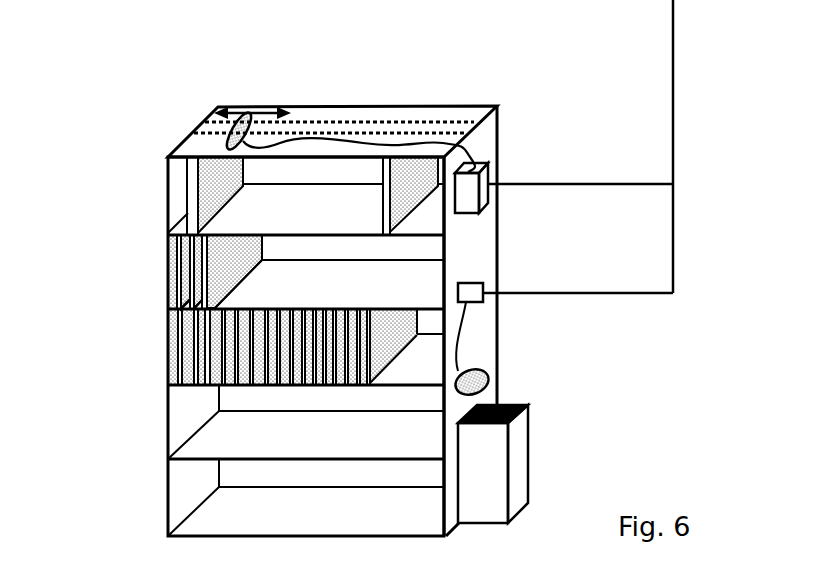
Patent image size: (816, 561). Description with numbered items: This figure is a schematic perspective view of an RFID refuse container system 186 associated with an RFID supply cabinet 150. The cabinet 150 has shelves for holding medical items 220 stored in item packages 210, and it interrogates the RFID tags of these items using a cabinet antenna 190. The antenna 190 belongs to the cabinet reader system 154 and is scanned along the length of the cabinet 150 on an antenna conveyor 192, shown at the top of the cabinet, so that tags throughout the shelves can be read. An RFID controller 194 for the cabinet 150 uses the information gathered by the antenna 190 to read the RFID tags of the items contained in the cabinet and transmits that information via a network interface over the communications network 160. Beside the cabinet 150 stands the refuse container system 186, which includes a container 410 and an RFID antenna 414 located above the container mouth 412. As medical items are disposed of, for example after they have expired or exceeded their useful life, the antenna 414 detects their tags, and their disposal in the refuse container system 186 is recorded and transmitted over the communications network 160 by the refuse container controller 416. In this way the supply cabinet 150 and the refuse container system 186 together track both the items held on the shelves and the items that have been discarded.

The cabinet reader system 154 is at (514, 137).
The cabinet antenna 190 is at (214, 113).
The antenna conveyor 192 is at (412, 123).
The RFID controller 194 is at (489, 182).
The refuse container controller 416 is at (484, 292).
The RFID antenna 414 is at (489, 378).
The RFID supply cabinet 150 is at (506, 346).
The communications network 160 is at (673, 247).
The container mouth 412 is at (521, 404).
The container 410 is at (530, 452).
The refuse container system 186 is at (556, 472).
The item packages 210 is at (150, 272).
The medical items 220 is at (176, 288).